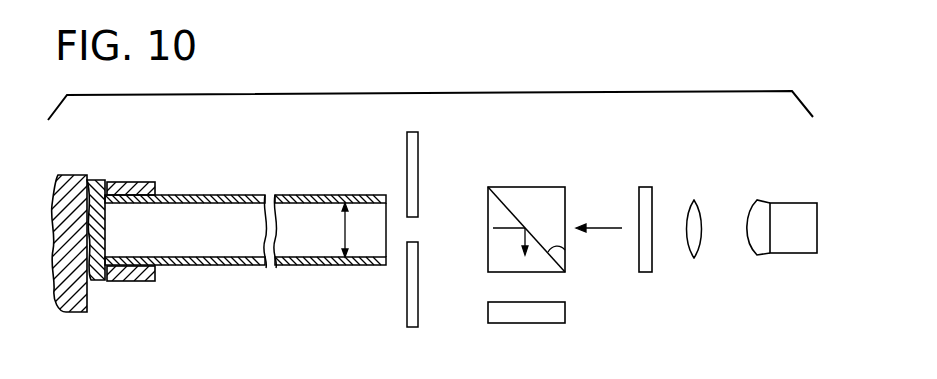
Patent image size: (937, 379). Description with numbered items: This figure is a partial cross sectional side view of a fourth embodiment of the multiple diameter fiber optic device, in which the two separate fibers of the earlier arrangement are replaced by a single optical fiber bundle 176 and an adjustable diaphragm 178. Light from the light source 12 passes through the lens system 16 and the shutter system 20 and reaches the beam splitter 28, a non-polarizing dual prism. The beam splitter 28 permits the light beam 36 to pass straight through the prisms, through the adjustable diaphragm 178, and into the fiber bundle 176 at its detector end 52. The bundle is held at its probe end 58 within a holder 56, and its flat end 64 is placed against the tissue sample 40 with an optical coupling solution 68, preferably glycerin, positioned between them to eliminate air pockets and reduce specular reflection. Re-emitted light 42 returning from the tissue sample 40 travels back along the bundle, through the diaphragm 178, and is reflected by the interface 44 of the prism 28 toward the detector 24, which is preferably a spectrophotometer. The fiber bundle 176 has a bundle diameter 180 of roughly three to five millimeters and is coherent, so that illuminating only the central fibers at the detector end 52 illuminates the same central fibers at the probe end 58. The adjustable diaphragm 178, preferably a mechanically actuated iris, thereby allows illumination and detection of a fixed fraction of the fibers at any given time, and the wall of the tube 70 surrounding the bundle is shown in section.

The light source 12 is at (794, 215).
The lens system 16 is at (693, 215).
The shutter system 20 is at (643, 190).
The detector 24 is at (560, 311).
The beam splitter 28 is at (536, 198).
The light beam 36 is at (600, 227).
The tissue sample 40 is at (62, 185).
The re-emitted light 42 is at (509, 230).
The interface 44 is at (565, 250).
The detector end 52 is at (290, 218).
The holder 56 is at (145, 188).
The probe end 58 is at (195, 213).
The flat end 64 is at (107, 225).
The optical coupling solution 68 is at (100, 276).
The upper wall 70 is at (340, 195).
The optical fiber bundle 176 is at (302, 250).
The adjustable diaphragm 178 is at (412, 136).
The bundle diameter 180 is at (350, 236).